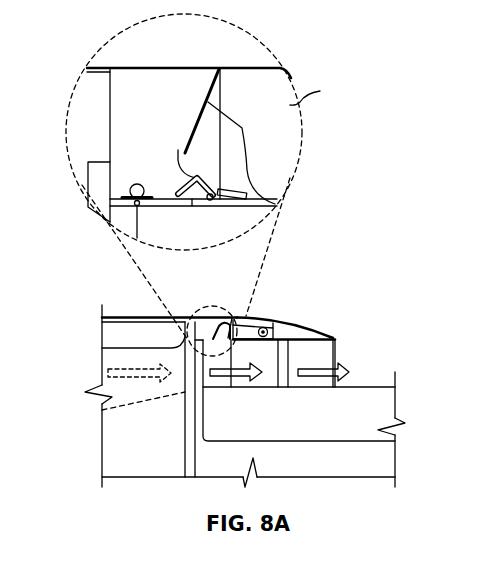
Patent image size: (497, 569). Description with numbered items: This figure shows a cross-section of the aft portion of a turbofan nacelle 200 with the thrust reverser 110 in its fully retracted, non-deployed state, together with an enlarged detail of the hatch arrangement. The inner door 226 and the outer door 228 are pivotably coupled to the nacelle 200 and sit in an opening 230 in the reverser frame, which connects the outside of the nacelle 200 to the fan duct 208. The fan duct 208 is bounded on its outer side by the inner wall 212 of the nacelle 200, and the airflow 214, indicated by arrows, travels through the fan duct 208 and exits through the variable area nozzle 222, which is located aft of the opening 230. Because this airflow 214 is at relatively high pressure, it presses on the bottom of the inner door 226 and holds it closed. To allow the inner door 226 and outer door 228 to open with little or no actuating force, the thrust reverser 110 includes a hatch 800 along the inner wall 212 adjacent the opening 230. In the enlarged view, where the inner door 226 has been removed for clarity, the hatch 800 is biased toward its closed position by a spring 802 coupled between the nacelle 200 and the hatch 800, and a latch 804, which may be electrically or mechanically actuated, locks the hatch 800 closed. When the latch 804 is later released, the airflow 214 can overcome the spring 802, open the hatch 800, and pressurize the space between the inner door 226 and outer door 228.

The nacelle 200 is at (122, 314).
The inner wall 212 is at (110, 347).
The airflow 214 is at (130, 379).
The fan duct 208 is at (269, 364).
The opening 230 is at (220, 295).
The thrust reverser 110 is at (233, 300).
The inner door 226 is at (250, 318).
The outer door 228 is at (258, 320).
The variable area nozzle 222 is at (333, 338).
The hatch 800 is at (155, 207).
The spring 802 is at (138, 184).
The latch 804 is at (178, 150).